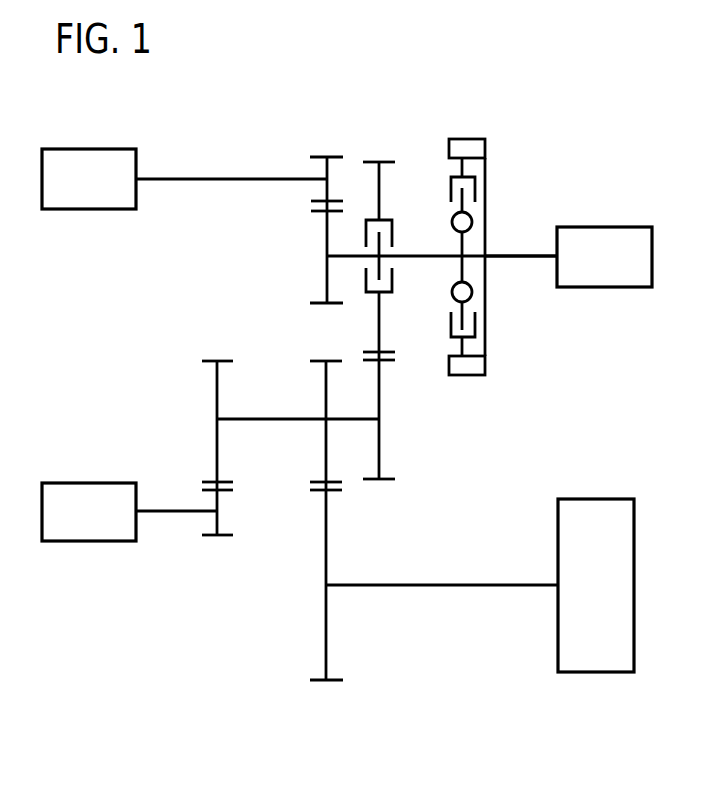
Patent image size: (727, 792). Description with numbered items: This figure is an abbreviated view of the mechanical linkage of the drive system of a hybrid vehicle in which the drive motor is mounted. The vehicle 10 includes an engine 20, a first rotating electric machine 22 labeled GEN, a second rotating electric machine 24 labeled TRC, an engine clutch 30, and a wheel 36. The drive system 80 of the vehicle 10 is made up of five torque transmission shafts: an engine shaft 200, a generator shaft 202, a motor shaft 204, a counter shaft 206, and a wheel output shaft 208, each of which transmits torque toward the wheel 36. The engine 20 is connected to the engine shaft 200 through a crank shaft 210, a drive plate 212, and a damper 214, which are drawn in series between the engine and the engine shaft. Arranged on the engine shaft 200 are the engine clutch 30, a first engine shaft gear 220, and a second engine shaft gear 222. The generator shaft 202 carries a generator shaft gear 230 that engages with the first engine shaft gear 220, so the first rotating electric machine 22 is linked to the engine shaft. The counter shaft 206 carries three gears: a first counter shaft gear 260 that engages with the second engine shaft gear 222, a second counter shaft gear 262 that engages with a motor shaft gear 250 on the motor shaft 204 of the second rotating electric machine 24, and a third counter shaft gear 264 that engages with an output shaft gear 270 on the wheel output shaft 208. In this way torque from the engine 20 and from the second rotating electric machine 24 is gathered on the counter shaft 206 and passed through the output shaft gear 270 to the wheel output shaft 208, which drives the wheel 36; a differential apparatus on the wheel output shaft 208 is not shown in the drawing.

The vehicle 10 is at (245, 79).
The engine 20 is at (631, 226).
The first rotating electric machine 22 is at (111, 148).
The second rotating electric machine 24 is at (111, 481).
The engine clutch 30 is at (388, 220).
The wheel 36 is at (605, 498).
The drive system 80 is at (492, 203).
The engine shaft 200 is at (412, 250).
The generator shaft 202 is at (216, 176).
The motor shaft 204 is at (158, 508).
The counter shaft 206 is at (264, 416).
The wheel output shaft 208 is at (442, 582).
The crank shaft 210 is at (516, 251).
The drive plate 212 is at (486, 177).
The damper 214 is at (449, 175).
The first engine shaft gear 220 is at (317, 298).
The second engine shaft gear 222 is at (376, 161).
The generator shaft gear 230 is at (324, 156).
The motor shaft gear 250 is at (210, 538).
The first counter shaft gear 260 is at (385, 483).
The second counter shaft gear 262 is at (209, 358).
The third counter shaft gear 264 is at (317, 358).
The output shaft gear 270 is at (318, 683).